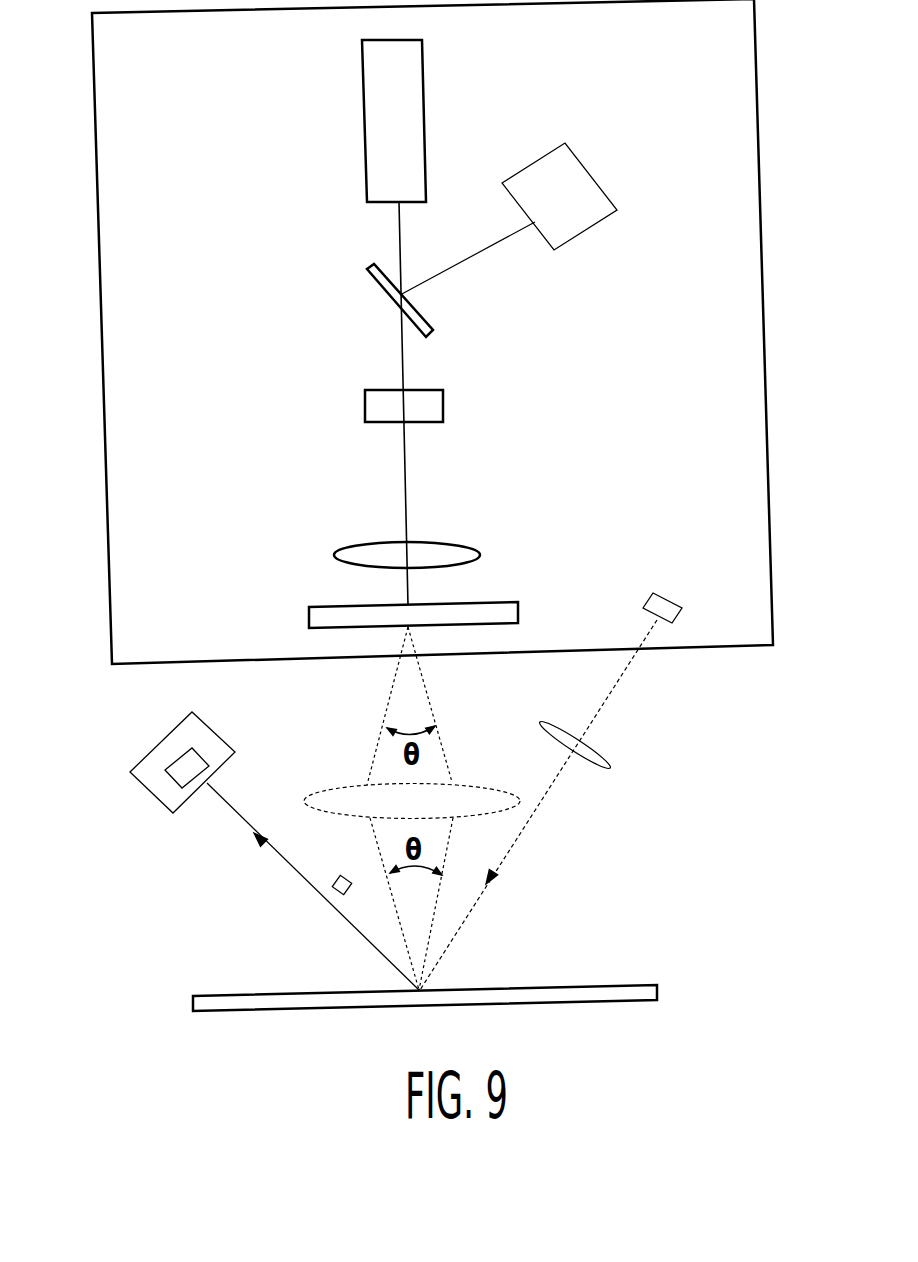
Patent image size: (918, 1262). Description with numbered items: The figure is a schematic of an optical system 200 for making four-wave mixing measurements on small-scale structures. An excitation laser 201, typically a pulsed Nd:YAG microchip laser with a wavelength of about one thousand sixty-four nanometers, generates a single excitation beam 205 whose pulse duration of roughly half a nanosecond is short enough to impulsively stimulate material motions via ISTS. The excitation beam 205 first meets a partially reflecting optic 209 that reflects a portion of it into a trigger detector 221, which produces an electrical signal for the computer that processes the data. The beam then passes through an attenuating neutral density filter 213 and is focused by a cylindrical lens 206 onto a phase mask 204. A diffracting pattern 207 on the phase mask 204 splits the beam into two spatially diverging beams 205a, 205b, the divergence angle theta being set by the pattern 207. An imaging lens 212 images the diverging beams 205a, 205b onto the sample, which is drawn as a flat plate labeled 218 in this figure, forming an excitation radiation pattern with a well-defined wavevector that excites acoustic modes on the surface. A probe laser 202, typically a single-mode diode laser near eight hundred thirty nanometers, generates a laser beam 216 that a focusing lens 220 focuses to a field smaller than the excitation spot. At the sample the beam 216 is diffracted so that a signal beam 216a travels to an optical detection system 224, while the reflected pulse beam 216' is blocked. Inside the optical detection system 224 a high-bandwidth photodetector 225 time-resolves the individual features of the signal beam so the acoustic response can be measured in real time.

The optical system 200 is at (757, 152).
The excitation laser 201 is at (412, 92).
The probe laser 202 is at (677, 615).
The phase mask 204 is at (518, 612).
The excitation beam 205 is at (400, 238).
The diverging beam 205a is at (430, 700).
The diverging beam 205b is at (387, 705).
The cylindrical lens 206 is at (453, 540).
The pattern 207 is at (428, 593).
The partially reflecting optic 209 is at (373, 290).
The imaging lens 212 is at (478, 790).
The neutral density filter 213 is at (443, 405).
The laser beam 216 is at (560, 805).
The reflected pulse beam 216' is at (324, 861).
The signal beam 216a is at (303, 880).
The sample 218 is at (610, 982).
The focusing lens 220 is at (600, 750).
The trigger detector 221 is at (590, 173).
The optical detection system 224 is at (180, 802).
The photodetector 225 is at (180, 762).